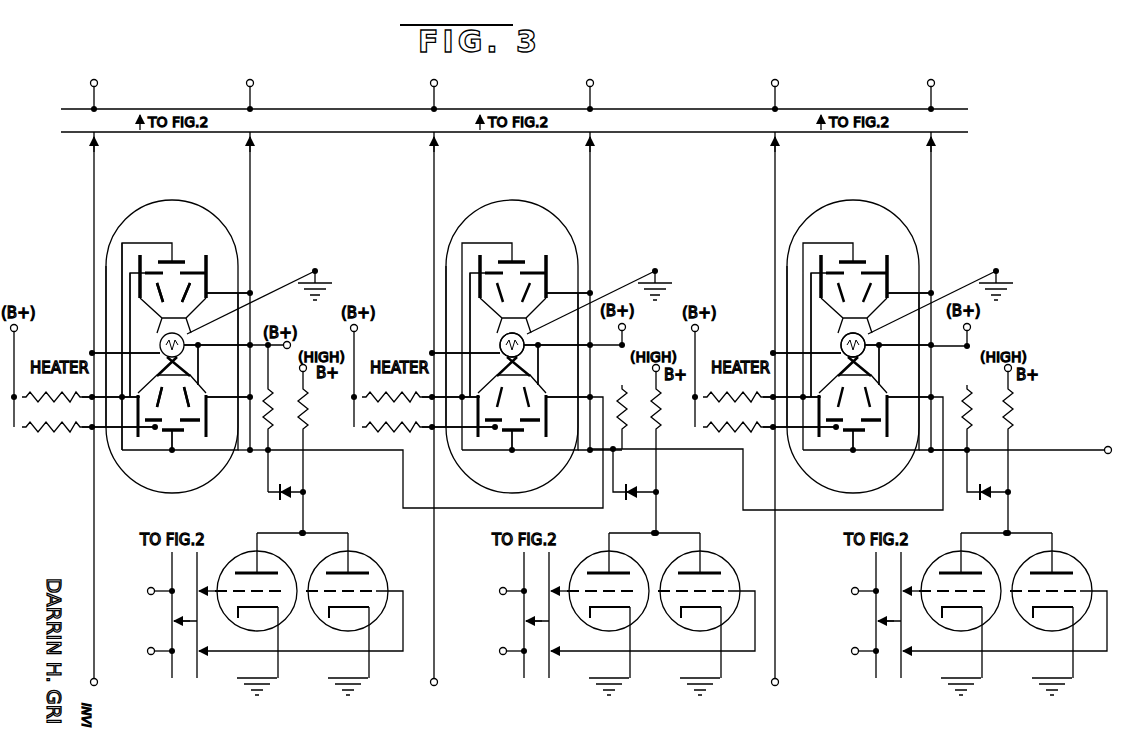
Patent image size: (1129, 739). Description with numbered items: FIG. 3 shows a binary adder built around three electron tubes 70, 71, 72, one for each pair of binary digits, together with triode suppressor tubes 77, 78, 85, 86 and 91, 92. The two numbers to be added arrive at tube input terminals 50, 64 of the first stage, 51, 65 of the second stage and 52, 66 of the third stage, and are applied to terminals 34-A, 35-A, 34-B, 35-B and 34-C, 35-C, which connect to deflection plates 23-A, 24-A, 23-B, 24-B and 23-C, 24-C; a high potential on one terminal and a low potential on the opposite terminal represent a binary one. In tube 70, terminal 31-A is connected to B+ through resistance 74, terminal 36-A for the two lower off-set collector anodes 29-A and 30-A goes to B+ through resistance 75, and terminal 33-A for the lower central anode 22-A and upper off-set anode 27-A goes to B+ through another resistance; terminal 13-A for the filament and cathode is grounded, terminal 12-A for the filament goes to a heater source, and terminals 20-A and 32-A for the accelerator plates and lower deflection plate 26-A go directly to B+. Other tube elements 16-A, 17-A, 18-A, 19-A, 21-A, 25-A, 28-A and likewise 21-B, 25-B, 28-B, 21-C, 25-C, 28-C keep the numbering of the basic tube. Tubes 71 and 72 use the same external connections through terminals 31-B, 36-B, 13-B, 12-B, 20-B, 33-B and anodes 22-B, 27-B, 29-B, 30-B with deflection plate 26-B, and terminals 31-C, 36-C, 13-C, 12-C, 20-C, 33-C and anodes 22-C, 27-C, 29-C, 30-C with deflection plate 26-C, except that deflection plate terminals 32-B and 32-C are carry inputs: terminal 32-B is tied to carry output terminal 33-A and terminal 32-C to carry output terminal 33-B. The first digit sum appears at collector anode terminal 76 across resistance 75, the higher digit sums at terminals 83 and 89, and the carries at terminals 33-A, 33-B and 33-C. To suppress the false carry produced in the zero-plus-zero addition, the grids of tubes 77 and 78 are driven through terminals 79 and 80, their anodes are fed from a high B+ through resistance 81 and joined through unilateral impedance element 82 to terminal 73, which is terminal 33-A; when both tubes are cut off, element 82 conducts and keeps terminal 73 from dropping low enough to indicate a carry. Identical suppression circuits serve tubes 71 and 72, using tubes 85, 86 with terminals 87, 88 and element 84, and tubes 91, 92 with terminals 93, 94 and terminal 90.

The tube input terminal 50 is at (104, 75).
The tube input terminal 51 is at (435, 369).
The tube input terminal 52 is at (776, 369).
The tube input terminal 64 is at (261, 75).
The tube input terminal 65 is at (592, 254).
The tube input terminal 66 is at (933, 254).
The electron tube 70 is at (150, 200).
The electron tube 71 is at (511, 321).
The electron tube 72 is at (852, 321).
The filament terminal 12-A is at (92, 353).
The filament terminal 12-B is at (450, 346).
The filament terminal 12-C is at (791, 346).
The filament and cathode terminal 13-A is at (331, 276).
The filament and cathode terminal 13-B is at (668, 278).
The filament and cathode terminal 13-C is at (1009, 278).
The deflection electrode 16-A is at (159, 334).
The deflection electrode 17-A is at (187, 301).
The deflection electrode 18-A is at (156, 383).
The deflection electrode 19-A is at (192, 386).
The accelerator plate terminal 20-A is at (250, 345).
The accelerator plate terminal 20-B is at (573, 331).
The accelerator plate terminal 20-C is at (914, 331).
The upper electrode 21-A is at (172, 260).
The upper electrode 21-B is at (520, 219).
The upper electrode 21-C is at (861, 219).
The lower central anode 22-A is at (172, 452).
The lower central anode 22-B is at (515, 462).
The lower central anode 22-C is at (857, 462).
The deflection plate 23-A is at (129, 310).
The deflection plate 23-B is at (435, 335).
The deflection plate 23-C is at (776, 335).
The deflection plate 24-A is at (233, 310).
The deflection plate 24-B is at (591, 285).
The deflection plate 24-C is at (932, 285).
The lead 25-A is at (130, 400).
The cathode 25-B is at (496, 349).
The cathode 25-C is at (837, 349).
The lower deflection plate 26-A is at (198, 346).
The lower deflection plate 26-B is at (556, 365).
The lower deflection plate 26-C is at (897, 365).
The upper off-set anode 27-A is at (140, 270).
The upper off-set anode 27-B is at (458, 239).
The upper off-set anode 27-C is at (799, 239).
The plate 28-A is at (207, 270).
The plate 28-B is at (565, 239).
The plate 28-C is at (907, 239).
The lower off-set collector anode 29-A is at (155, 430).
The lower off-set collector anode 29-B is at (489, 446).
The lower off-set collector anode 29-C is at (831, 446).
The lower off-set collector anode 30-A is at (191, 432).
The lower off-set collector anode 30-B is at (542, 446).
The lower off-set collector anode 30-C is at (883, 446).
The terminal 31-A is at (96, 398).
The terminal 31-B is at (421, 404).
The terminal 31-C is at (762, 404).
The lower deflection plate terminal 32-A is at (250, 398).
The carry input terminal 32-B is at (580, 383).
The carry input terminal 32-C is at (921, 383).
The collector anode terminal 33-A is at (250, 451).
The collector anode terminal 33-B is at (599, 464).
The collector anode terminal 33-C is at (942, 464).
The binary input terminal 34-A is at (106, 300).
The binary input terminal 34-B is at (415, 340).
The binary input terminal 34-C is at (756, 340).
The binary input terminal 35-A is at (250, 293).
The binary input terminal 35-B is at (590, 274).
The binary input terminal 35-C is at (931, 274).
The terminal 36-A is at (96, 428).
The terminal 36-B is at (428, 435).
The terminal 36-C is at (769, 435).
The terminal 73 is at (268, 452).
The resistance 74 is at (52, 400).
The resistance 75 is at (44, 428).
The collector anode terminal 76 is at (97, 685).
The suppressor electron tube 77 is at (227, 619).
The suppressor electron tube 78 is at (319, 619).
The terminal 79 is at (147, 590).
The terminal 80 is at (147, 650).
The resistance 81 is at (304, 420).
The unilateral impedance element 82 is at (283, 496).
The binary output terminal 83 is at (446, 696).
The diode 84 is at (614, 452).
The suppressor electron tube 85 is at (600, 614).
The suppressor electron tube 86 is at (653, 614).
The terminal 87 is at (504, 579).
The terminal 88 is at (504, 638).
The binary output terminal 89 is at (787, 696).
The output terminal 90 is at (1106, 448).
The suppressor electron tube 91 is at (952, 614).
The suppressor electron tube 92 is at (1005, 614).
The terminal 93 is at (856, 579).
The terminal 94 is at (856, 638).